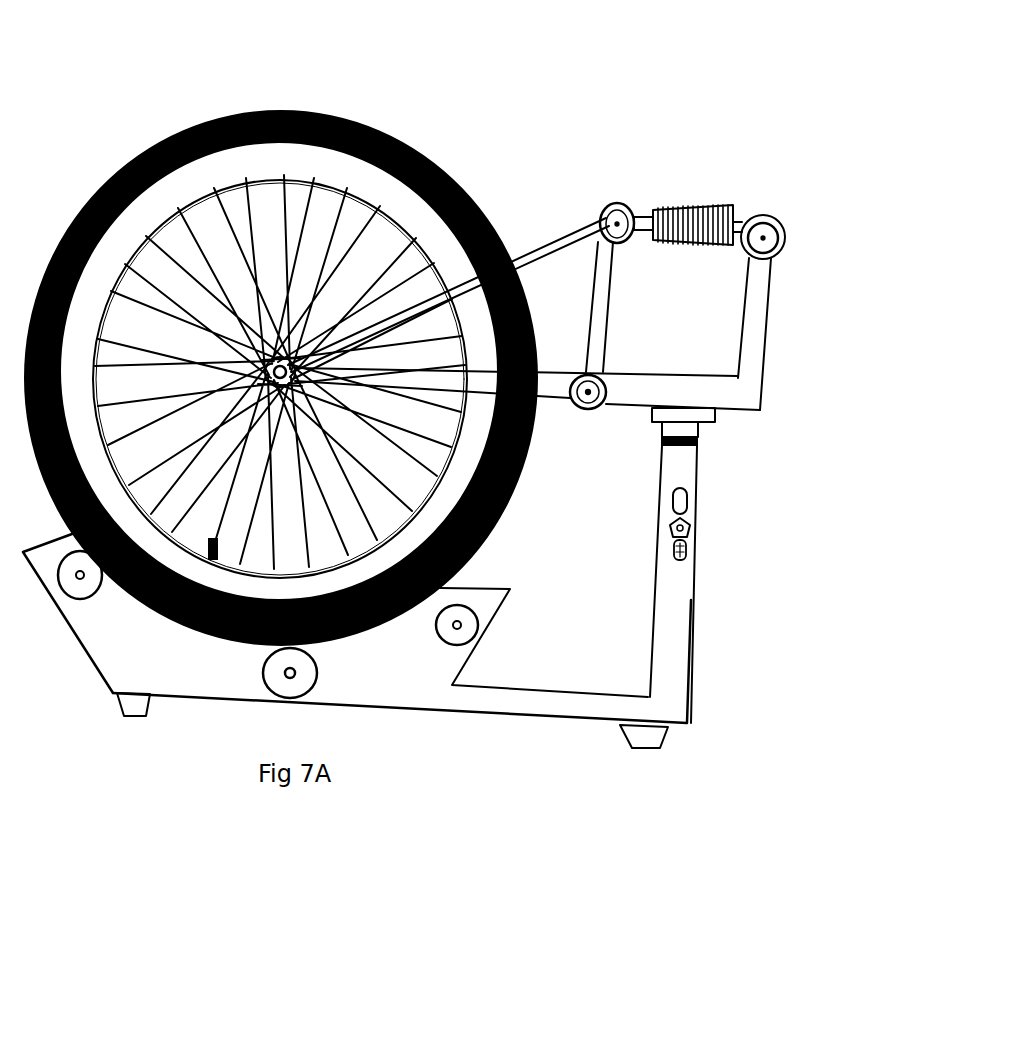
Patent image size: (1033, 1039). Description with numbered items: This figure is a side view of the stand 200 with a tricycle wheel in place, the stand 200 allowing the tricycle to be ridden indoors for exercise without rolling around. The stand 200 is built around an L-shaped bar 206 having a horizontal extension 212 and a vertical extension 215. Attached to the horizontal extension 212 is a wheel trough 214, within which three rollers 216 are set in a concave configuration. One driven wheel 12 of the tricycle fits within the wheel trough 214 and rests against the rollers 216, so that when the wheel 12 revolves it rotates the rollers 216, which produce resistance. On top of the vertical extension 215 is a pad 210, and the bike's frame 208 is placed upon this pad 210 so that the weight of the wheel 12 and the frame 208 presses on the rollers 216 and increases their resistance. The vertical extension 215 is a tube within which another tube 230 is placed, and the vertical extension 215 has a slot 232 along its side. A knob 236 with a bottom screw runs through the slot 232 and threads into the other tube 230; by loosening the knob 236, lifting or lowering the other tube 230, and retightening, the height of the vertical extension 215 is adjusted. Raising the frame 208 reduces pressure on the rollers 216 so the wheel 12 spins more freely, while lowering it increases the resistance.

The driven wheel 12 is at (262, 110).
The stand 200 is at (587, 727).
The L-shaped bar 206 is at (667, 592).
The frame 208 is at (740, 230).
The pad 210 is at (693, 410).
The horizontal extension 212 is at (523, 705).
The wheel trough 214 is at (173, 683).
The vertical extension 215 is at (672, 630).
The rollers 216 is at (315, 669).
The other tube 230 is at (693, 433).
The slot 232 is at (675, 502).
The knob 236 is at (692, 535).